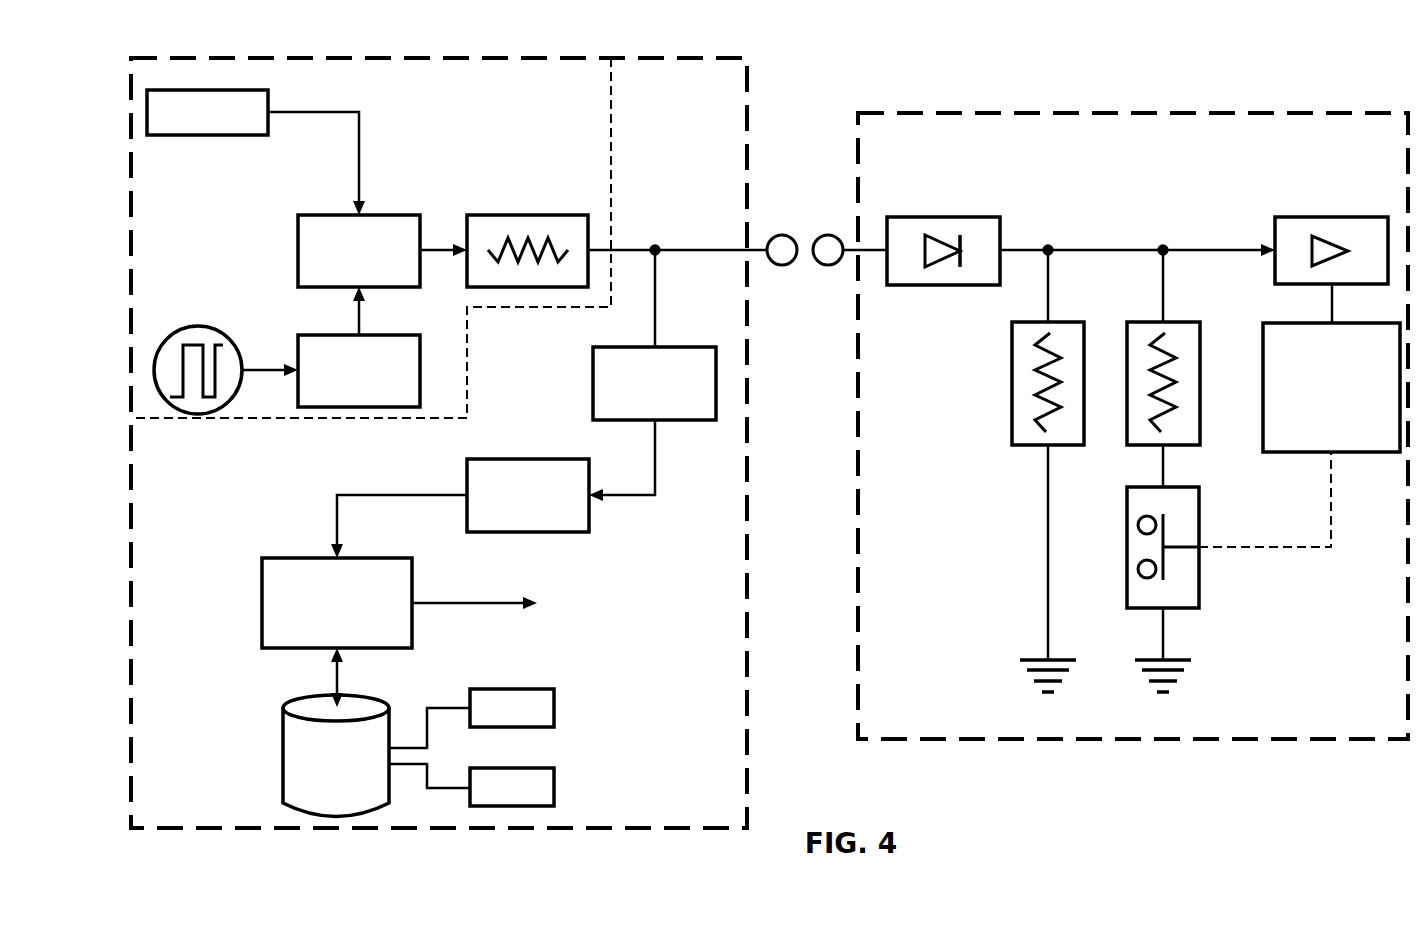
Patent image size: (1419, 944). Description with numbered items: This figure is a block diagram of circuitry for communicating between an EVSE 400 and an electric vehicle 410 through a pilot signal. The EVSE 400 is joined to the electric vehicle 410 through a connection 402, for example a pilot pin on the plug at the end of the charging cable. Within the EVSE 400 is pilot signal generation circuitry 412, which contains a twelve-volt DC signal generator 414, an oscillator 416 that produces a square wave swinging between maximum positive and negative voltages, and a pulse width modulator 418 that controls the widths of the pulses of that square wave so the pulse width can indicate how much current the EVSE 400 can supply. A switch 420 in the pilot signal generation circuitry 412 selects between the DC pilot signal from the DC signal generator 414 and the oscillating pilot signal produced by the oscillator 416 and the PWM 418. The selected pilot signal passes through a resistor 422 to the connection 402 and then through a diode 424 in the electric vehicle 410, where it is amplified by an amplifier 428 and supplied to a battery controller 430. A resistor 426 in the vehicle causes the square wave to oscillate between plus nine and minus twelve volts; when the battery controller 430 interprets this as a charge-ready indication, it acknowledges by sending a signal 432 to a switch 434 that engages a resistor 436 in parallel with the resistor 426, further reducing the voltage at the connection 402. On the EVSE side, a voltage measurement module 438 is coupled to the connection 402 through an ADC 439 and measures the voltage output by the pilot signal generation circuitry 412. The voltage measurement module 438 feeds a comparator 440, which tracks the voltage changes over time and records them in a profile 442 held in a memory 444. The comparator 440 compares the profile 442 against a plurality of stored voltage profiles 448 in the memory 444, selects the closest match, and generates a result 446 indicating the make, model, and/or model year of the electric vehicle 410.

The EVSE 400 is at (748, 97).
The electric vehicle 410 is at (858, 140).
The pilot signal generation circuitry 412 is at (611, 175).
The connection 402 is at (818, 235).
The 12 V DC signal generator 414 is at (168, 137).
The oscillator 416 is at (175, 333).
The pulse width modulator 418 is at (320, 335).
The switch 420 is at (320, 215).
The resistor 422 is at (492, 215).
The diode 424 is at (978, 217).
The resistor 426 is at (1087, 323).
The amplifier 428 is at (1302, 217).
The battery controller 430 is at (1262, 392).
The signal 432 is at (1295, 548).
The switch 434 is at (1202, 500).
The resistor 436 is at (1202, 323).
The voltage measurement module 438 is at (482, 459).
The ADC 439 is at (605, 347).
The comparator 440 is at (292, 558).
The profile 442 is at (545, 770).
The memory 444 is at (296, 702).
The result 446 is at (467, 602).
The stored voltage profiles 448 is at (545, 690).